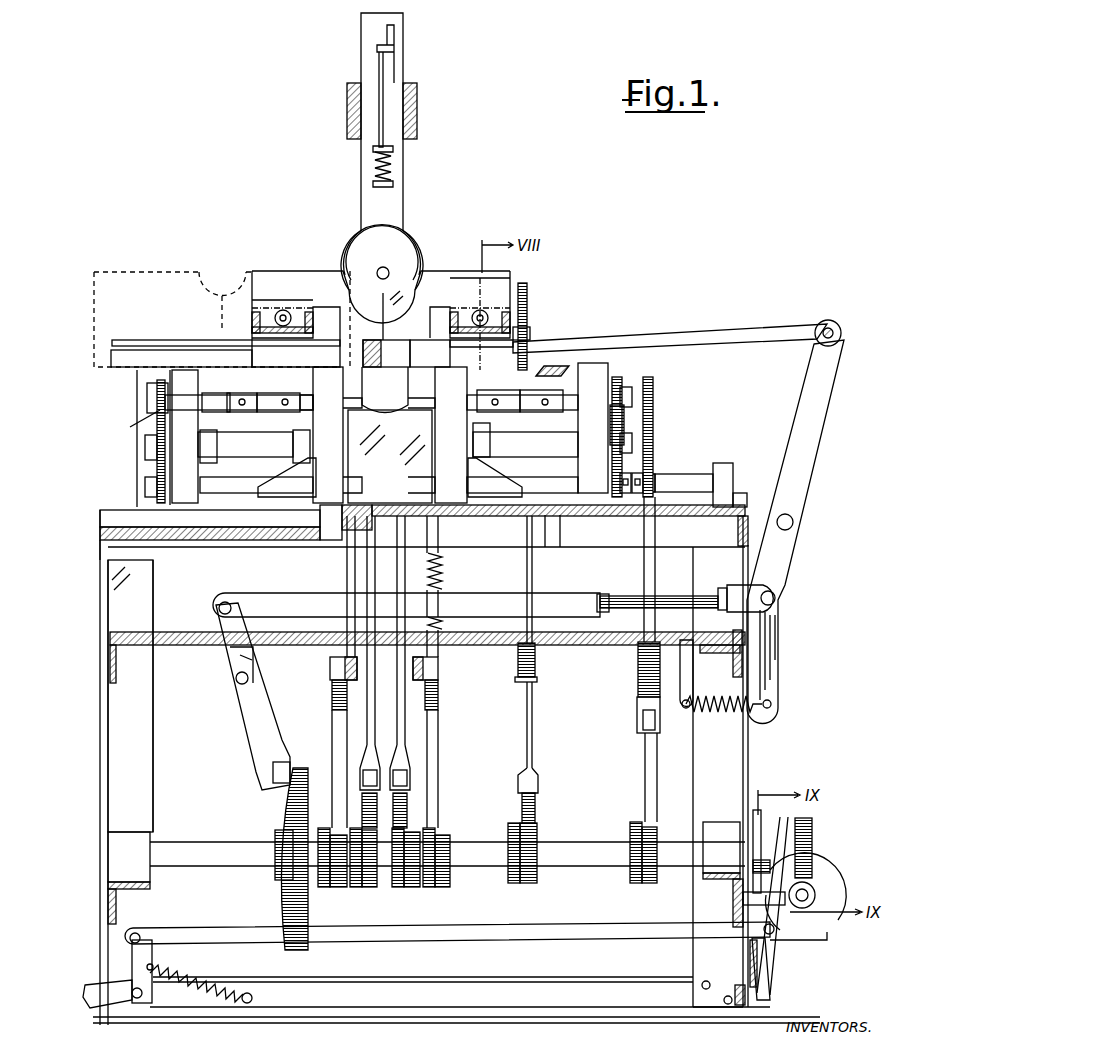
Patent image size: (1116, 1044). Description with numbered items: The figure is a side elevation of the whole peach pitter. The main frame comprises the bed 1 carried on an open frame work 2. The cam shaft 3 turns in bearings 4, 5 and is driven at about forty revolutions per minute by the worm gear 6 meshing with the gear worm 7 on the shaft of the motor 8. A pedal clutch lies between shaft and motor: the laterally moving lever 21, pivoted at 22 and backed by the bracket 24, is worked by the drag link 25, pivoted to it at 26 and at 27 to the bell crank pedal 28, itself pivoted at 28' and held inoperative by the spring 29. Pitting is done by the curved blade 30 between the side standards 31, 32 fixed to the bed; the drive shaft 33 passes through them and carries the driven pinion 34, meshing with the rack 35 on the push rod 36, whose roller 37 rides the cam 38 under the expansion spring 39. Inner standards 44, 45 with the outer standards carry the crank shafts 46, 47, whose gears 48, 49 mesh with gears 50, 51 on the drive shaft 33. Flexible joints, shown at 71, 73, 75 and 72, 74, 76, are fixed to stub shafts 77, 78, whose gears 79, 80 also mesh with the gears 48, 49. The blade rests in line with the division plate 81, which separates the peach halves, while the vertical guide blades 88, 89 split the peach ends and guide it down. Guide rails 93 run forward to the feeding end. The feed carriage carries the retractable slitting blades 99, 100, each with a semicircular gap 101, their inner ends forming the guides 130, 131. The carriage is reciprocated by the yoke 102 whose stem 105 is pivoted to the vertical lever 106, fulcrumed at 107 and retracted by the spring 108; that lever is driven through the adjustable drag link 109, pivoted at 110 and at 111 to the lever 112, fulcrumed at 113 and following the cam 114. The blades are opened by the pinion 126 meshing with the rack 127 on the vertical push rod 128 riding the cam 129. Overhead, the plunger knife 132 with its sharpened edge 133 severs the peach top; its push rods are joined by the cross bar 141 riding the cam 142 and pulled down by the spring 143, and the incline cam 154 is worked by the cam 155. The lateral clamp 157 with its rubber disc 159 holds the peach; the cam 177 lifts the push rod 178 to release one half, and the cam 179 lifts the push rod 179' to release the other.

The bed 1 is at (570, 540).
The open frame work 2 is at (145, 778).
The cam shaft 3 is at (618, 866).
The bearing 4 is at (133, 832).
The bearing 5 is at (722, 822).
The worm gear 6 is at (828, 835).
The gear worm 7 is at (815, 895).
The motor 8 is at (830, 925).
The laterally moving lever 21 is at (770, 960).
The pivot 22 is at (772, 990).
The bracket 24 is at (743, 903).
The drag link 25 is at (500, 935).
The pivot 26 is at (760, 935).
The pivot 27 is at (138, 933).
The bell crank pedal 28 is at (114, 974).
The pedal pivot 28' is at (139, 1016).
The spring 29 is at (208, 965).
The curved blade 30 is at (388, 392).
The side standard 31 is at (185, 436).
The side standard 32 is at (609, 477).
The drive shaft 33 is at (700, 470).
The driven pinion 34 is at (665, 463).
The rack 35 is at (665, 430).
The push rod 36 is at (668, 568).
The roller 37 is at (637, 722).
The cam 38 is at (645, 765).
The expansion spring 39 is at (638, 680).
The inner standard 44 is at (295, 472).
The inner standard 45 is at (451, 435).
The crank shaft 46 is at (255, 460).
The crank shaft 47 is at (513, 474).
The gear 48 is at (145, 457).
The gear 49 is at (625, 425).
The gear 50 is at (145, 490).
The gear 51 is at (618, 465).
The coupling 71 is at (292, 393).
The right coupling 72 is at (493, 390).
The collar 73 is at (303, 412).
The right feed shaft 74 is at (503, 423).
The coupling sleeve 75 is at (248, 393).
The right coupling sleeve 76 is at (548, 412).
The stub shaft 77 is at (220, 395).
The stub shaft 78 is at (621, 365).
The gear 79 is at (147, 390).
The gear 80 is at (620, 396).
The vertical division plate 81 is at (390, 456).
The vertical guide blade 88 is at (328, 435).
The vertical guide blade 89 is at (406, 353).
The guide rail 93 is at (157, 350).
The slitting blade 99 is at (333, 271).
The slitting blade 100 is at (450, 271).
The semicircular gap 101 is at (387, 282).
The yoke 102 is at (660, 338).
The stem 105 is at (770, 332).
The vertical lever 106 is at (796, 475).
The fulcrum 107 is at (795, 522).
The spring 108 is at (725, 710).
The adjustable drag link 109 is at (590, 596).
The pivot 110 is at (777, 598).
The pivot 111 is at (218, 605).
The lever 112 is at (262, 730).
The fulcrum 113 is at (235, 682).
The cam 114 is at (268, 905).
The pinion 126 is at (216, 332).
The rack 127 is at (527, 294).
The vertical push rod 128 is at (526, 748).
The cam 129 is at (540, 830).
The guide 130 is at (369, 320).
The guide 131 is at (412, 315).
The plunger knife 132 is at (405, 202).
The sharpened edge 133 is at (384, 228).
The cross bar 141 is at (438, 666).
The cam 142 is at (440, 695).
The spring 143 is at (445, 575).
The incline cam 154 is at (346, 572).
The cam 155 is at (332, 698).
The lateral clamp 157 is at (421, 236).
The soft rubber disc 159 is at (349, 236).
The cam 177 is at (395, 887).
The push rod 178 is at (410, 742).
The cam 179 is at (360, 875).
The push rod 179' is at (337, 672).